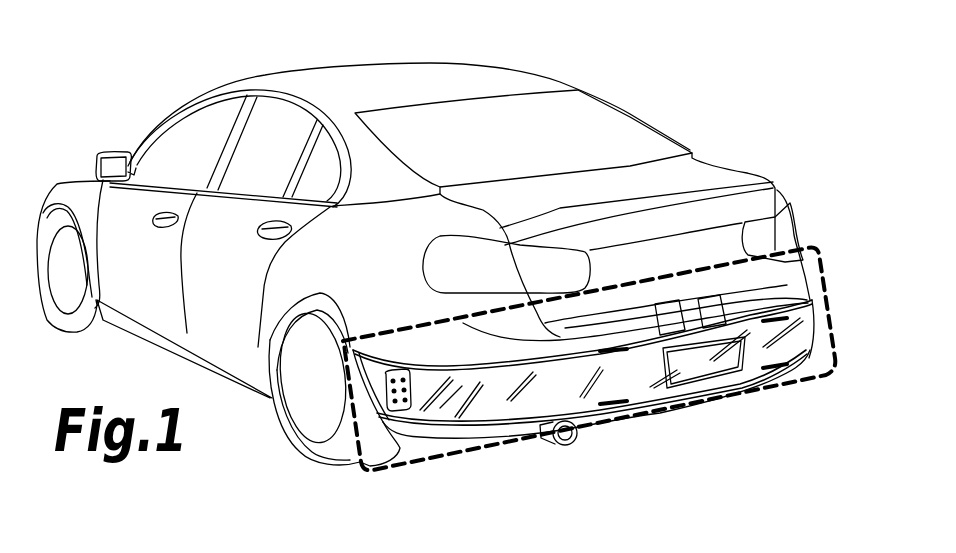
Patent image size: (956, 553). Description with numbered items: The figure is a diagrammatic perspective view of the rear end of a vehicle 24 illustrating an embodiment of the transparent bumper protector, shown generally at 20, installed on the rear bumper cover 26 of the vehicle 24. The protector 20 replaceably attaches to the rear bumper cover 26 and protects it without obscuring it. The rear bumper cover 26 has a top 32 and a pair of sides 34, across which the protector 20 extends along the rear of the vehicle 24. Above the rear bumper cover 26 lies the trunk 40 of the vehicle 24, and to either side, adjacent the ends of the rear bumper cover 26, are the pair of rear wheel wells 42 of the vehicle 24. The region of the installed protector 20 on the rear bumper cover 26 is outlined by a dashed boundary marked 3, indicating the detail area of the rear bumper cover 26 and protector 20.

The protector 20 is at (829, 210).
The vehicle 24 is at (327, 65).
The rear bumper cover 26 is at (437, 357).
The top 32 is at (503, 348).
The sides 34 is at (352, 348).
The trunk 40 is at (680, 260).
The rear wheel wells 42 is at (293, 291).
The detail region of FIG. 3 is at (465, 453).